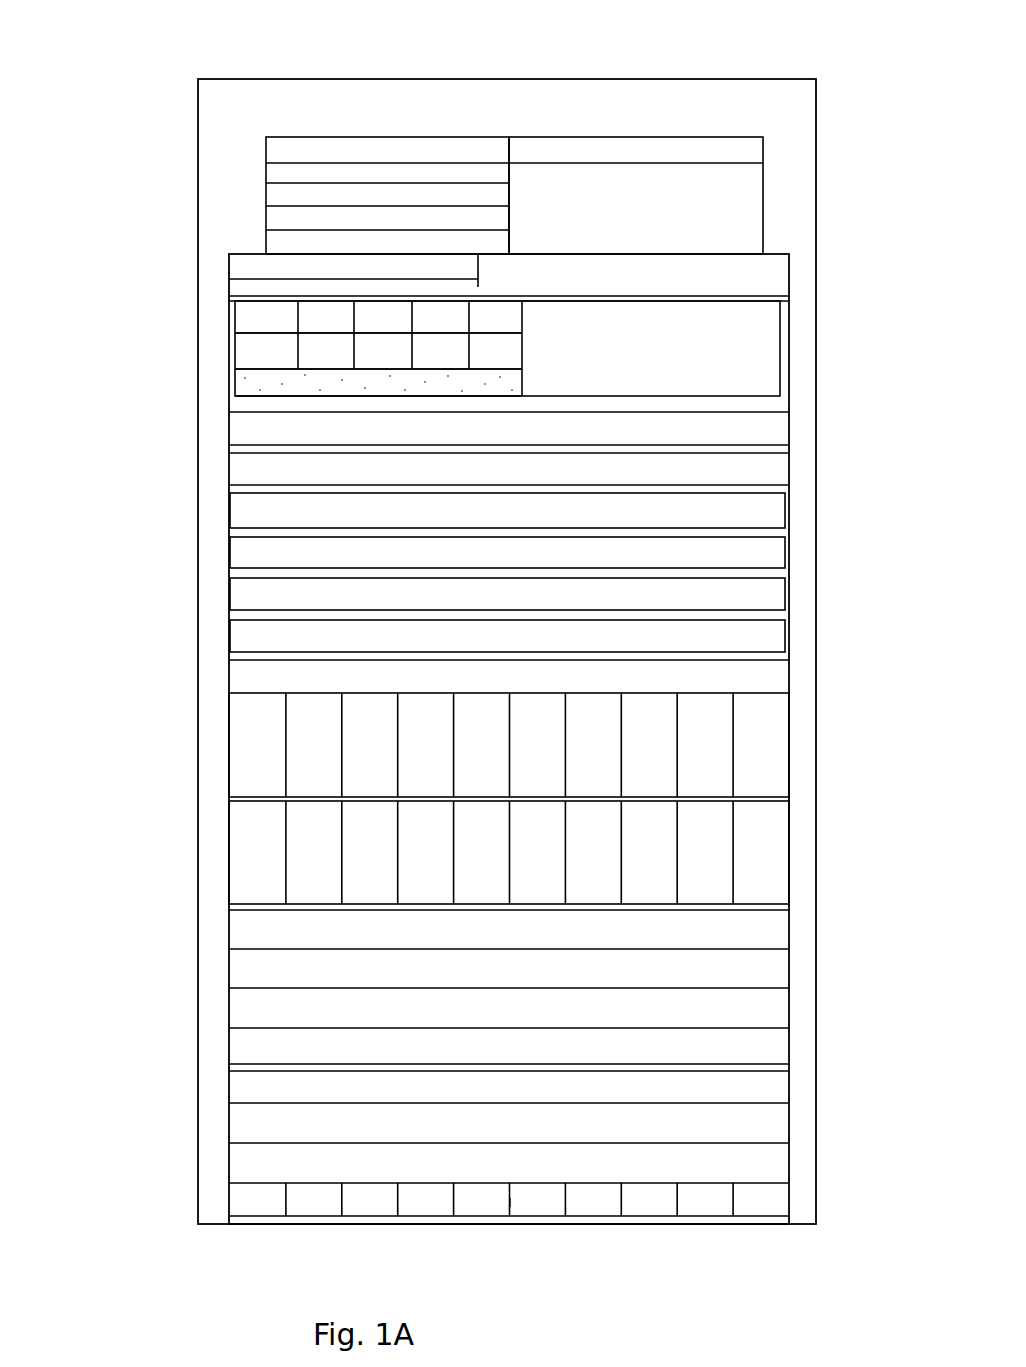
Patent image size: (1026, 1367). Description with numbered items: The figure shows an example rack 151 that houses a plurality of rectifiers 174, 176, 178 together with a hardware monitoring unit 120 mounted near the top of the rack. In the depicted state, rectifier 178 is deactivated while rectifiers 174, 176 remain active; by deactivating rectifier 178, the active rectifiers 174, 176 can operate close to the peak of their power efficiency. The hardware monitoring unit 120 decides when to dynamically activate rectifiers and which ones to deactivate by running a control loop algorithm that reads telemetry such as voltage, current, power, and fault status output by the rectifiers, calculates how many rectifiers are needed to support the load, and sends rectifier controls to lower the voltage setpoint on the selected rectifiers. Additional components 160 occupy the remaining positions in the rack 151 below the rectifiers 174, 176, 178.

The rack 151 is at (199, 112).
The hardware monitoring unit 120 is at (722, 190).
The storage shelves 160 is at (247, 527).
The rectifier 174 is at (247, 312).
The rectifier 176 is at (247, 345).
The rectifier 178 is at (233, 377).